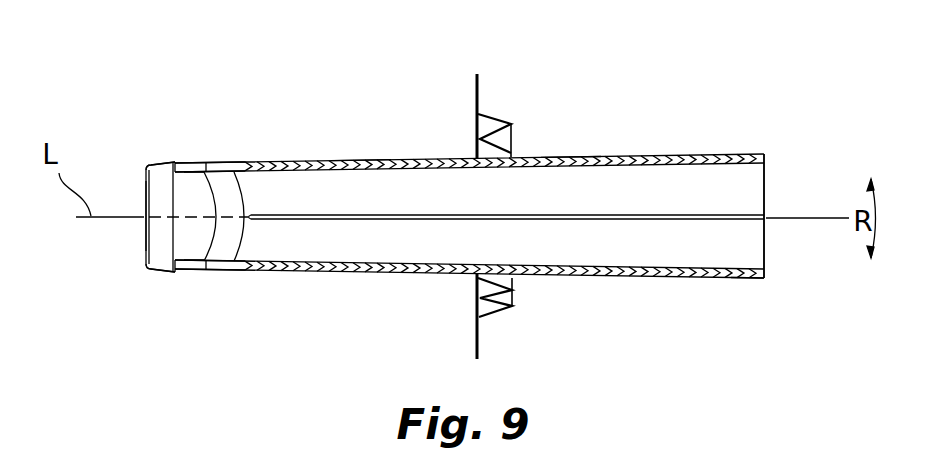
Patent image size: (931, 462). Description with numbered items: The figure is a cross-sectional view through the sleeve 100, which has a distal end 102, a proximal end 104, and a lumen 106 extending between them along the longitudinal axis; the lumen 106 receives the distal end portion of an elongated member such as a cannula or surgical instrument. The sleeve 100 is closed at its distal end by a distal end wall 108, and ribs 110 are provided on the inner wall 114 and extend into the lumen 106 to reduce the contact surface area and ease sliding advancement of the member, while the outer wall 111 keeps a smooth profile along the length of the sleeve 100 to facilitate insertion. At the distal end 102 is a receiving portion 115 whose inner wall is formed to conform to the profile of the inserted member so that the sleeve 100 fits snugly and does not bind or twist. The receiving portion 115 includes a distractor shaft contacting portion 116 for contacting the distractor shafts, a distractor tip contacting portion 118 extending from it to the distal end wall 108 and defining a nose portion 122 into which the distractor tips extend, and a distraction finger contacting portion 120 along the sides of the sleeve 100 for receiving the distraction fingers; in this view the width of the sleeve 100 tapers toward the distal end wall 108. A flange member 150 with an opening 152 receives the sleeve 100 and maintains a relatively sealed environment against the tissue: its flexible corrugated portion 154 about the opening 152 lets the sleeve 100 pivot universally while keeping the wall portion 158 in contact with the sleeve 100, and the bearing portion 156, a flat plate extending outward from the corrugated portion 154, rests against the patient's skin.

The sleeve 100 is at (706, 152).
The distal end 102 is at (174, 271).
The proximal end 104 is at (746, 280).
The lumen 106 is at (681, 202).
The distal end wall 108 is at (146, 167).
The ribs 110 is at (765, 157).
The outer wall 111 is at (568, 158).
The inner wall 114 is at (357, 160).
The receiving portion 115 is at (142, 259).
The distractor shaft contacting portion 116 is at (225, 180).
The distractor tip contacting portion 118 is at (183, 180).
The distraction finger contacting portion 120 is at (207, 162).
The nose portion 122 is at (148, 228).
The flange member 150 is at (498, 94).
The opening 152 is at (482, 316).
The corrugated portion 154 is at (512, 127).
The bearing portion 156 is at (478, 348).
The wall portion 158 is at (477, 155).